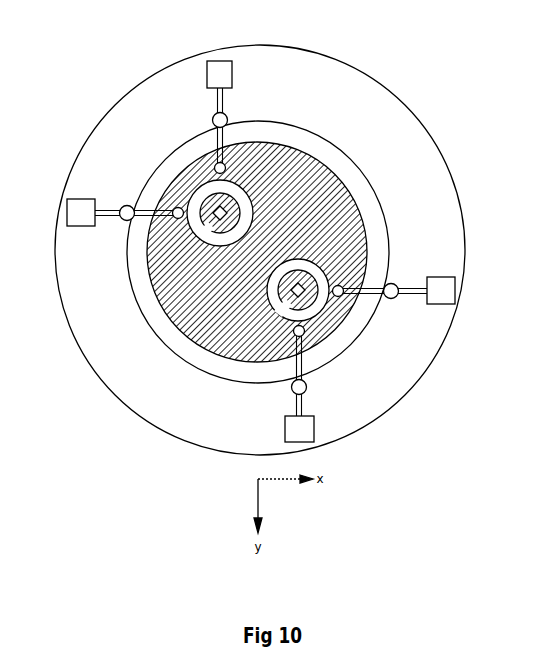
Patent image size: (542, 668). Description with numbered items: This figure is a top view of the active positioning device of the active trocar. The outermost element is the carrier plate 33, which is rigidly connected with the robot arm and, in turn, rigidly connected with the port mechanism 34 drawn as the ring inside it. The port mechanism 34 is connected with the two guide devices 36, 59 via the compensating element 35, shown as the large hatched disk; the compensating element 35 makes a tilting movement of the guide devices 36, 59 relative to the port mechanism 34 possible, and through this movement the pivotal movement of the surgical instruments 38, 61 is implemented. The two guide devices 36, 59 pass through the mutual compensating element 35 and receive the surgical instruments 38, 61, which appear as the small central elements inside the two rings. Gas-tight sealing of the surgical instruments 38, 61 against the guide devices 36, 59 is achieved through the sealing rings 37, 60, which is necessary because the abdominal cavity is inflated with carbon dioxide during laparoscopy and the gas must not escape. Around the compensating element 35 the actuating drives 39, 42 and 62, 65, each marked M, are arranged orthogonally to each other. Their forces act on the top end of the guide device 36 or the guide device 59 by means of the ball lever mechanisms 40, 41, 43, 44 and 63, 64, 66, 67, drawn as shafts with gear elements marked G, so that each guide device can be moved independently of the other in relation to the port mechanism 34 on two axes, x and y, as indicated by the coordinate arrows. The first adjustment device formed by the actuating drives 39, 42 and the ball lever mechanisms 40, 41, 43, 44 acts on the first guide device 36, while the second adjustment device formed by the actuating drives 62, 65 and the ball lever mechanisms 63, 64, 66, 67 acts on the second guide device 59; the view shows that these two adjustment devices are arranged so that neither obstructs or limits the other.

The carrier plate 33 is at (392, 90).
The port mechanism 34 is at (308, 131).
The compensating element 35 is at (336, 172).
The guide device 36 is at (212, 238).
The sealing ring 37 is at (208, 246).
The surgical instrument 38 is at (197, 231).
The actuating drive 39 is at (67, 212).
The ball lever mechanism 40 is at (137, 216).
The ball lever mechanism 41 is at (171, 208).
The actuating drive 42 is at (221, 61).
The ball lever mechanism 43 is at (224, 102).
The ball lever mechanism 44 is at (214, 163).
The guide device 59 is at (352, 186).
The sealing ring 60 is at (360, 203).
The surgical instrument 61 is at (364, 243).
The actuating drive 62 is at (456, 286).
The ball lever mechanism 63 is at (384, 276).
The ball lever mechanism 64 is at (389, 300).
The actuating drive 65 is at (317, 427).
The ball lever mechanism 66 is at (294, 373).
The ball lever mechanism 67 is at (308, 382).